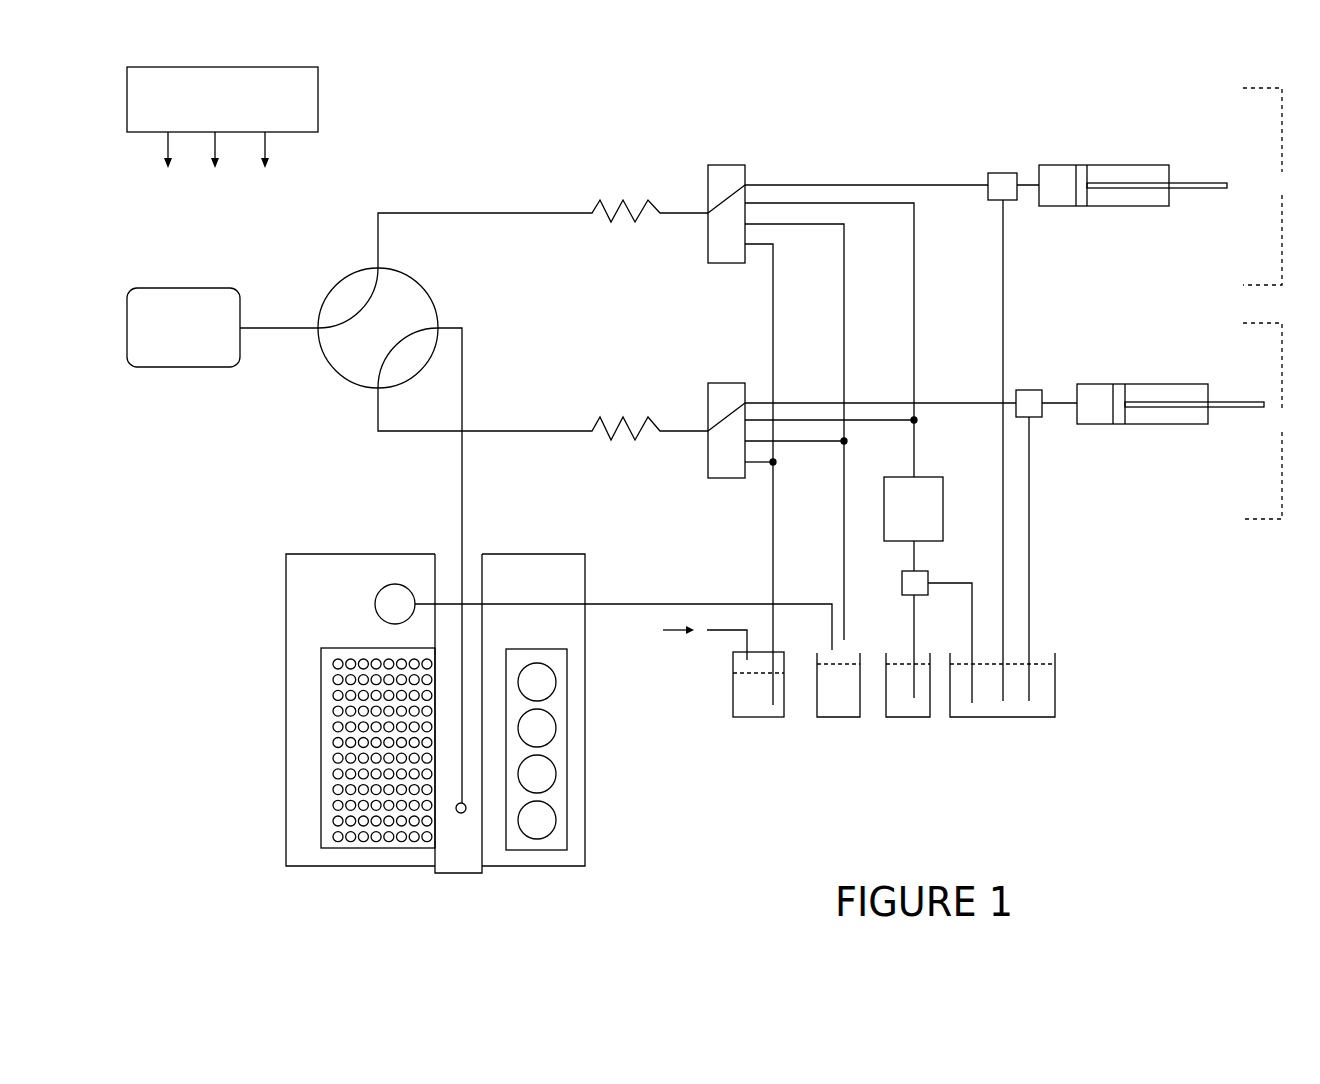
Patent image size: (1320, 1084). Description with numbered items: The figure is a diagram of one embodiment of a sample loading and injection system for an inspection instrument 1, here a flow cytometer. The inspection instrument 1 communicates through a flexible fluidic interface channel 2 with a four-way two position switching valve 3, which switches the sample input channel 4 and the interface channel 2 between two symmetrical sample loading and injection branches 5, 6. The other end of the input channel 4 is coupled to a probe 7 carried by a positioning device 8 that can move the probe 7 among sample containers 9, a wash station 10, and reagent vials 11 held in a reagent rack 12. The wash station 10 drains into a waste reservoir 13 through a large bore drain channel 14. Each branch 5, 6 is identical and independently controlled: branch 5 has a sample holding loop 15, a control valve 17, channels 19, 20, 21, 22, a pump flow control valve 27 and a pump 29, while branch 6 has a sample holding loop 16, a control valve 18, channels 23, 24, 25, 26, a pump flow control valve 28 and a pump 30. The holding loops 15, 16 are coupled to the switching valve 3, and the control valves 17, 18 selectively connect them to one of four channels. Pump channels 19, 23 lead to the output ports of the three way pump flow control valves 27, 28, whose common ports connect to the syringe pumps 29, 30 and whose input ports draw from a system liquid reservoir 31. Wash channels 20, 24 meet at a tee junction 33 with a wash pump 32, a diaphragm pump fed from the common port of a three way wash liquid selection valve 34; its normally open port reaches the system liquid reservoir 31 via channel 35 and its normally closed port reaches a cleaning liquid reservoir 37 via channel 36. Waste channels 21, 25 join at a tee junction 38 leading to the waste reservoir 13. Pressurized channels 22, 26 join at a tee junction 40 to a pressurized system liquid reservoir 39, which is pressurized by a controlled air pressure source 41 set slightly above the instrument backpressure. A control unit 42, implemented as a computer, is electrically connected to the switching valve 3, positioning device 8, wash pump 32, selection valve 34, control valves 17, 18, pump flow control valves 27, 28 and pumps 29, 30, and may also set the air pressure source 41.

The inspection instrument 1 is at (182, 378).
The flexible fluidic interface channel 2 is at (273, 340).
The four-way two position switching valve 3 is at (337, 383).
The sample input channel 4 is at (455, 497).
The sample loading and injection branch 5 is at (1265, 421).
The sample loading and injection branch 6 is at (1265, 186).
The probe 7 is at (457, 820).
The positioning device 8 is at (278, 643).
The sample containers 9 is at (315, 824).
The wash station 10 is at (375, 578).
The reagent vials 11 is at (557, 835).
The reagent rack 12 is at (535, 853).
The waste reservoir 13 is at (842, 748).
The large bore drain channel 14 is at (665, 600).
The sample holding loop 15 is at (620, 402).
The sample holding loop 16 is at (627, 188).
The control valve 17 is at (725, 375).
The control valve 18 is at (722, 152).
The pump channel 19 is at (792, 395).
The wash channel 20 is at (868, 413).
The waste channel 21 is at (805, 450).
The pressurized channel 22 is at (757, 470).
The pump channel 23 is at (772, 178).
The wash channel 24 is at (813, 197).
The waste channel 25 is at (853, 287).
The pressurized channel 26 is at (777, 308).
The pump flow control valve 27 is at (1030, 382).
The pump flow control valve 28 is at (1003, 160).
The pump 29 is at (1105, 380).
The pump 30 is at (1077, 158).
The system liquid reservoir 31 is at (1065, 705).
The wash pump 32 is at (946, 505).
The tee junction 33 is at (923, 423).
The three way wash liquid selection valve 34 is at (935, 570).
The channel 35 is at (967, 642).
The channel 36 is at (907, 642).
The cleaning liquid reservoir 37 is at (943, 778).
The tee junction 38 is at (850, 443).
The pressurized system liquid reservoir 39 is at (727, 695).
The tee junction 40 is at (778, 465).
The air pressure source 41 is at (652, 700).
The control unit 42 is at (332, 102).